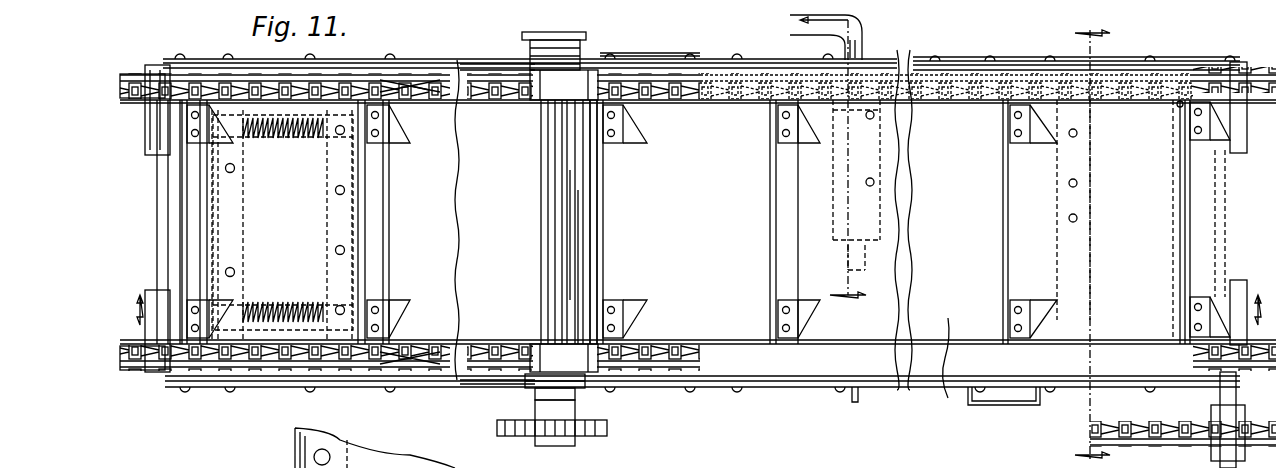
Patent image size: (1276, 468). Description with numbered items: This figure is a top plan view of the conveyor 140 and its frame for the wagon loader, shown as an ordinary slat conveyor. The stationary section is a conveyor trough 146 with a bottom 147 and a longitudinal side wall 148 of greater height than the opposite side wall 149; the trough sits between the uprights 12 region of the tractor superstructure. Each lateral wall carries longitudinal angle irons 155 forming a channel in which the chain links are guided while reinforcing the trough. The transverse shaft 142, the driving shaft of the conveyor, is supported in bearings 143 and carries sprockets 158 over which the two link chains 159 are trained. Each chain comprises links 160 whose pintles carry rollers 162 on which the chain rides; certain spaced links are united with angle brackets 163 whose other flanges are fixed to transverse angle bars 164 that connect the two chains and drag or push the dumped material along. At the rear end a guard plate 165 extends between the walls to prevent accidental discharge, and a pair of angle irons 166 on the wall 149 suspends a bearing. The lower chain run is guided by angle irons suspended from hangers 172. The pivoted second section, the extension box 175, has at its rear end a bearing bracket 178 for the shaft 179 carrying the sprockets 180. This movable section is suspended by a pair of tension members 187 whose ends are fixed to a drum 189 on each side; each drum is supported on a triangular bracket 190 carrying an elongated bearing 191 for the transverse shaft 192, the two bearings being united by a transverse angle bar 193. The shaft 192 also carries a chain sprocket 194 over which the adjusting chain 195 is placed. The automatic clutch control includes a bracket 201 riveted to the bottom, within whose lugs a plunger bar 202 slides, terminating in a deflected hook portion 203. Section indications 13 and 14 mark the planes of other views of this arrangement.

The uprights 12 is at (1092, 239).
The section line 13- 13 is at (822, 166).
The section line 14- 14 is at (693, 310).
The conveyor 140 is at (695, 58).
The transverse shaft 142 is at (1237, 405).
The bearings 143 is at (1230, 147).
The conveyor trough 146 is at (950, 68).
The bottom 147 is at (940, 366).
The longitudinal side wall 148 is at (870, 398).
The side wall 149 is at (905, 62).
The longitudinal angle irons 155 is at (942, 103).
The sprockets 158 is at (1240, 67).
The link chains 159 is at (685, 100).
The links 160 is at (430, 72).
The rollers 162 is at (420, 95).
The angle brackets 163 is at (385, 125).
The transverse angle bars 164 is at (388, 183).
The guard plate 165 is at (1180, 110).
The angle irons 166 is at (1040, 402).
The hangers 172 is at (885, 60).
The extension box 175 is at (275, 388).
The bearing bracket 178 is at (148, 155).
The shaft 179 is at (155, 194).
The sprockets 180 is at (146, 103).
The tension members 187 is at (488, 60).
The drum 189 is at (575, 38).
The bracket 190 is at (670, 56).
The elongated bearing 191 is at (535, 103).
The transverse shaft 192 is at (541, 177).
The transverse angle bar 193 is at (585, 237).
The chain sprocket 194 is at (607, 428).
The chain 195 is at (417, 448).
The bracket 201 is at (880, 238).
The bar 202 is at (870, 258).
The hook portion 203 is at (855, 34).